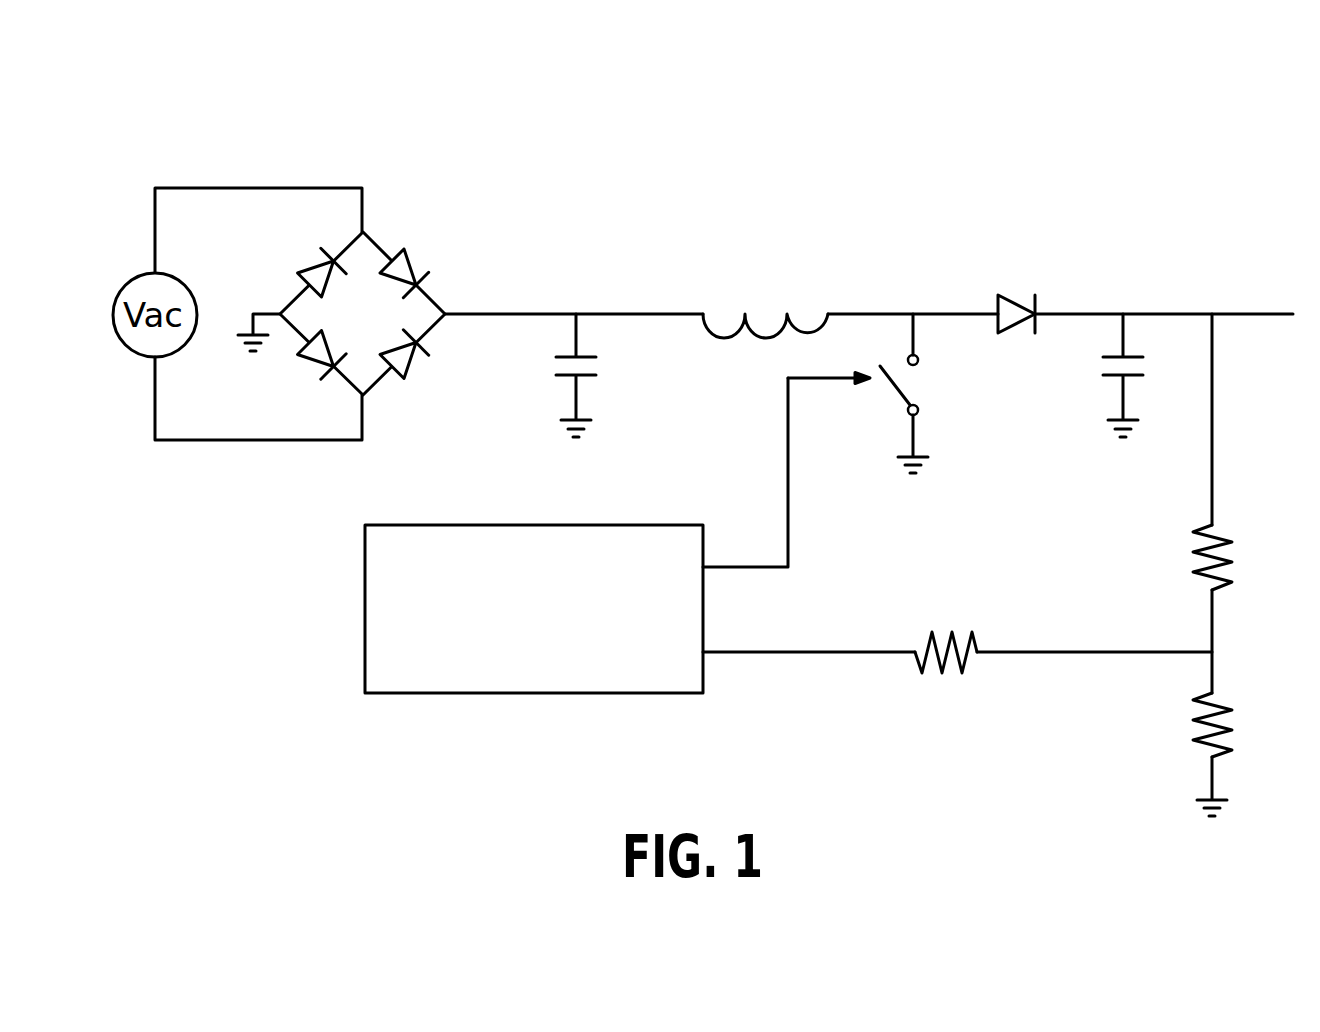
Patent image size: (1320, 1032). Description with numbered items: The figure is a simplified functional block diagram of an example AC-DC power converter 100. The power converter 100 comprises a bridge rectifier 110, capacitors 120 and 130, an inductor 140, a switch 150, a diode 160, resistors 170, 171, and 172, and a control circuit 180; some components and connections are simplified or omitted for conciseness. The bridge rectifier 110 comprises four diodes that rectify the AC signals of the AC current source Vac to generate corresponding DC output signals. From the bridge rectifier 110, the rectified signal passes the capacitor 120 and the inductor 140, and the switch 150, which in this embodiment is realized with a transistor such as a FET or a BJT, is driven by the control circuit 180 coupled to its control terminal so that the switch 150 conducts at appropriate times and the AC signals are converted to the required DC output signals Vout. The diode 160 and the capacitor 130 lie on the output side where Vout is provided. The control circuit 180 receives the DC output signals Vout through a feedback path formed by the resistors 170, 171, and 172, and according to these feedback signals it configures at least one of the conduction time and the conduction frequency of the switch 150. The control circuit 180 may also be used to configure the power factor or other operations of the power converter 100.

The power converter 100 is at (1137, 142).
The bridge rectifier 110 is at (400, 232).
The capacitor 120 is at (520, 366).
The capacitor 130 is at (1073, 382).
The inductor 140 is at (782, 290).
The switch 150 is at (952, 388).
The diode 160 is at (1037, 289).
The resistor 170 is at (1152, 568).
The resistor 171 is at (1152, 732).
The resistor 172 is at (900, 680).
The control circuit 180 is at (365, 653).